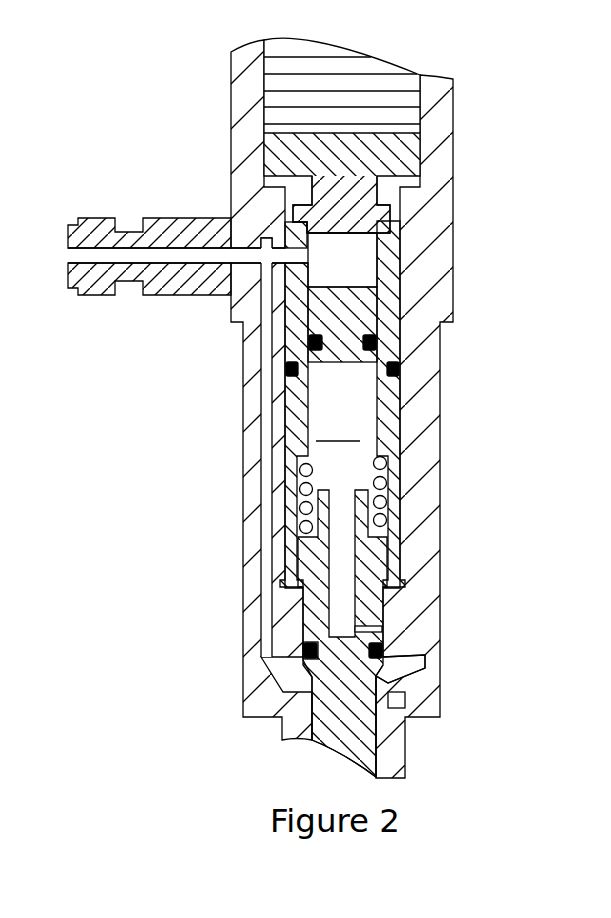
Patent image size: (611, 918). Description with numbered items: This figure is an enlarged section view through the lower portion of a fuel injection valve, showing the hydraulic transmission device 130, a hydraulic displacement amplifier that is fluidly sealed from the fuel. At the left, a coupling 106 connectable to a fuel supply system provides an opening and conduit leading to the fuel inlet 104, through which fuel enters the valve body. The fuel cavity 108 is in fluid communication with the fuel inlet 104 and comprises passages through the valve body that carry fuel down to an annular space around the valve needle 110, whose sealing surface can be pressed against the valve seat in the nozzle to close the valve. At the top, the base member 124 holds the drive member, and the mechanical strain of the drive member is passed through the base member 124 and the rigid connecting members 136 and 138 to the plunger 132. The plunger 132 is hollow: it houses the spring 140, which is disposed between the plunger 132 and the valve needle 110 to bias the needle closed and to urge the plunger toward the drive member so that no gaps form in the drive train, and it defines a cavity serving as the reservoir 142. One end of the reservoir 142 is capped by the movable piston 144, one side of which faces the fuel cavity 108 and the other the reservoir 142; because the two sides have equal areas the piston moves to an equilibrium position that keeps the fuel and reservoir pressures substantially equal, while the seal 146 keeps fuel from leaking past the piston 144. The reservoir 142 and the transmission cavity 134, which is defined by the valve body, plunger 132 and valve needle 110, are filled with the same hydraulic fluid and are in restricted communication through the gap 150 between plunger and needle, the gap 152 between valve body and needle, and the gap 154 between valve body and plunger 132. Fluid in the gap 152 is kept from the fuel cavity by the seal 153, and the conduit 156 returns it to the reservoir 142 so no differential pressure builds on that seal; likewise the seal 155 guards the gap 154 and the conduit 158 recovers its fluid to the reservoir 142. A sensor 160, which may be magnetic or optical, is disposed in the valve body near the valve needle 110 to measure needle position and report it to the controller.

The fuel inlet 104 is at (240, 258).
The coupling 106 is at (102, 228).
The fuel cavity 108 is at (267, 485).
The valve needle 110 is at (357, 735).
The base member 124 is at (315, 157).
The hydraulic transmission device 130 is at (205, 565).
The plunger 132 is at (420, 415).
The transmission cavity 134 is at (383, 630).
The connecting member 136 is at (368, 177).
The connecting member 138 is at (348, 218).
The spring 140 is at (380, 480).
The reservoir 142 is at (342, 337).
The piston 144 is at (342, 317).
The seal 146 is at (380, 337).
The gap 150 is at (390, 530).
The gap 152 is at (305, 643).
The seal 153 is at (303, 656).
The gap 154 is at (287, 421).
The seal 155 is at (286, 363).
The conduit 156 is at (380, 662).
The conduit 158 is at (292, 380).
The sensor 160 is at (397, 698).